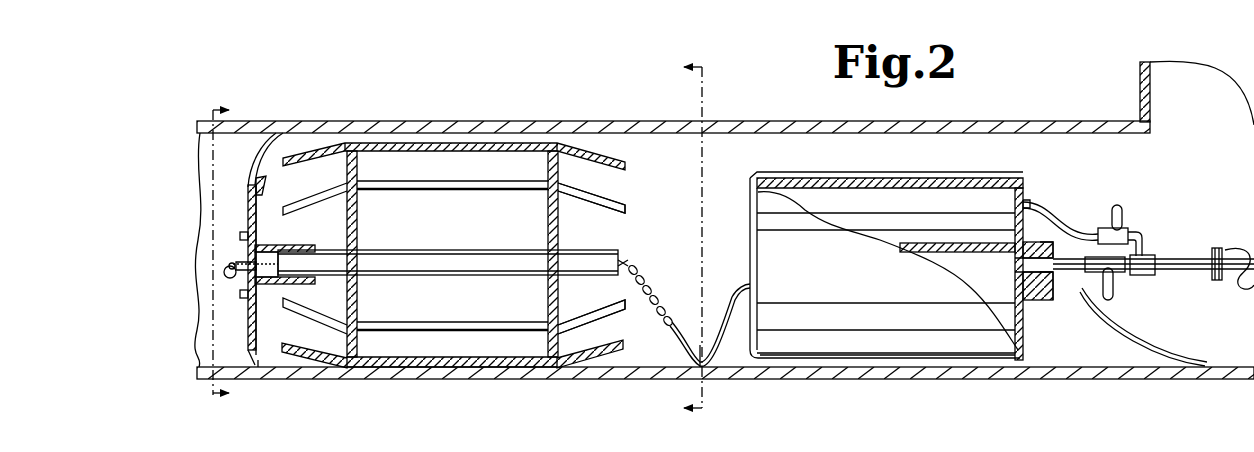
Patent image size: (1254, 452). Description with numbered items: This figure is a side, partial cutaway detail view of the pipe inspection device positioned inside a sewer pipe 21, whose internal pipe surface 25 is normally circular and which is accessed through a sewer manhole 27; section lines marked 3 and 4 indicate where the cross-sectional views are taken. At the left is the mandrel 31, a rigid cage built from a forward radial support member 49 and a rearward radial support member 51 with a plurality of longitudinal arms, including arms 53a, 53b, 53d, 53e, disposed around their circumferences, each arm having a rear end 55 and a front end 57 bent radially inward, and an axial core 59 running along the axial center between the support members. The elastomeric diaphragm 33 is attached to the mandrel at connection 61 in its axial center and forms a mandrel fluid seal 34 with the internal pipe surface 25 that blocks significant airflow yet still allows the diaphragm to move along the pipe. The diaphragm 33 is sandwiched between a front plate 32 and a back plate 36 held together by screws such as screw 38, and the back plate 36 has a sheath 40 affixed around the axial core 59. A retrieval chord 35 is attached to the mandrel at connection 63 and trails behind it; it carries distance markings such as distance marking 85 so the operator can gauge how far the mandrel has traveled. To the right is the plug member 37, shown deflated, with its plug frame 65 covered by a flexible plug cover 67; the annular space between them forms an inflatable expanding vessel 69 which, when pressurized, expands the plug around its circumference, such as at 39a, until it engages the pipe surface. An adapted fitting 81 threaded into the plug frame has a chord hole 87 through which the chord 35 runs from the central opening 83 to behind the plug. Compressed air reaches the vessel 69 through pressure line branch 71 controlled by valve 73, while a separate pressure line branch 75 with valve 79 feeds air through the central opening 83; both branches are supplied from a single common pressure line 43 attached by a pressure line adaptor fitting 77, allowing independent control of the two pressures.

The section line 3- 3 is at (677, 239).
The section line 4- 4 is at (223, 254).
The sewer pipe 21 is at (681, 120).
The internal pipe surface 25 is at (620, 378).
The sewer manhole 27 is at (1212, 115).
The mandrel 31 is at (630, 201).
The front plate 32 is at (248, 216).
The elastomeric diaphragm 33 is at (263, 160).
The mandrel fluid seal 34 is at (252, 362).
The retrieval chord 35 is at (700, 345).
The back plate 36 is at (266, 189).
The plug member 37 is at (745, 204).
The screw 38 is at (240, 294).
The plug circumference expansion location 39a is at (870, 178).
The sheath 40 is at (284, 245).
The common pressure line 43 is at (1240, 288).
The forward radial support member 49 is at (357, 226).
The rearward radial support member 51 is at (548, 218).
The arm 53a is at (473, 142).
The arm 53b is at (454, 201).
The arm 53d is at (470, 320).
The arm 53e is at (470, 368).
The rear end 55 is at (618, 334).
The front end 57 is at (303, 330).
The axial core 59 is at (470, 250).
The connection 61 is at (226, 262).
The connection 63 is at (642, 260).
The plug frame 65 is at (775, 194).
The flexible plug cover 67 is at (858, 328).
The inflatable expanding vessel 69 is at (978, 208).
The pressure line branch 71 is at (1068, 210).
The valve 73 is at (1134, 222).
The pressure line branch 75 is at (1150, 280).
The pressure line adaptor fitting 77 is at (1220, 246).
The valve 79 is at (1118, 284).
The adapted fitting 81 is at (1055, 258).
The central opening 83 is at (946, 252).
The distance marking 85 is at (720, 312).
The chord hole 87 is at (1018, 280).